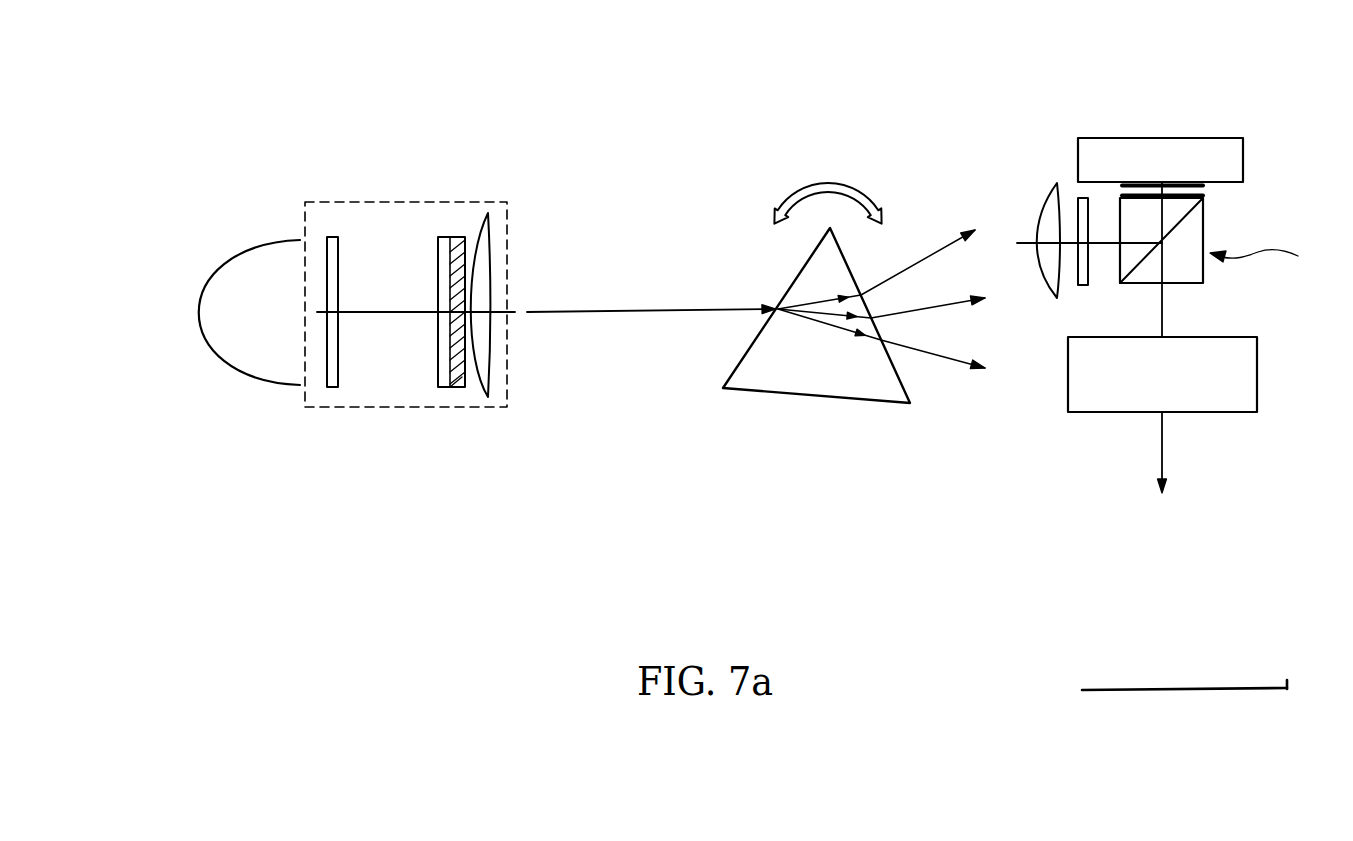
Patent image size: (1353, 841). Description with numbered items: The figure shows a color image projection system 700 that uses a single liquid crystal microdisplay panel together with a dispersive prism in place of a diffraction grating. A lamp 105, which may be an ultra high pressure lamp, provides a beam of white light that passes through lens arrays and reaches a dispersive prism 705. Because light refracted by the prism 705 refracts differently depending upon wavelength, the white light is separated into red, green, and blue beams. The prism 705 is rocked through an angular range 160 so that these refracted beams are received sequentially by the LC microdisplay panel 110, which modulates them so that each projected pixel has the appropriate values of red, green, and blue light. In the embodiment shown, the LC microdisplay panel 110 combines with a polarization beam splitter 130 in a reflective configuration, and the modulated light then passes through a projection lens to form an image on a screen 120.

The color image projection system 700 is at (705, 43).
The lamp 105 is at (203, 337).
The angular range 160 is at (853, 182).
The dispersive prism 705 is at (847, 402).
The LC microdisplay panel 110 is at (1245, 172).
The polarization beam splitter 130 is at (1325, 293).
The screen 120 is at (1250, 691).